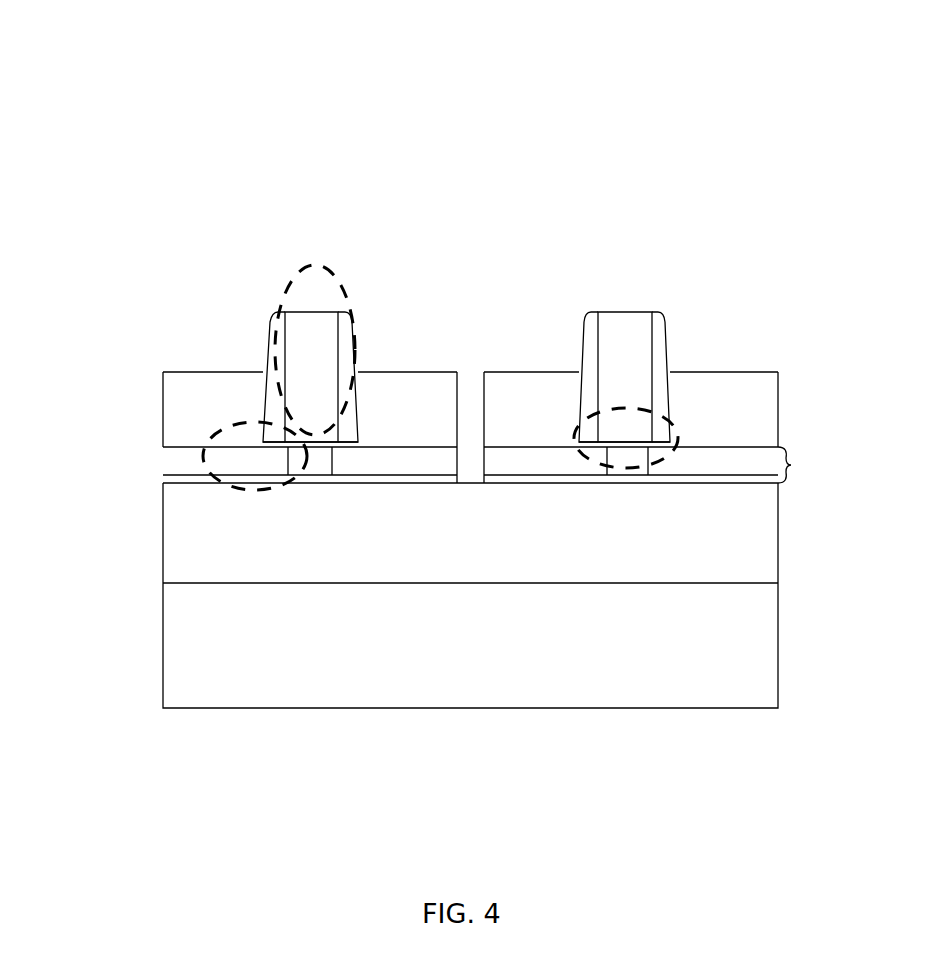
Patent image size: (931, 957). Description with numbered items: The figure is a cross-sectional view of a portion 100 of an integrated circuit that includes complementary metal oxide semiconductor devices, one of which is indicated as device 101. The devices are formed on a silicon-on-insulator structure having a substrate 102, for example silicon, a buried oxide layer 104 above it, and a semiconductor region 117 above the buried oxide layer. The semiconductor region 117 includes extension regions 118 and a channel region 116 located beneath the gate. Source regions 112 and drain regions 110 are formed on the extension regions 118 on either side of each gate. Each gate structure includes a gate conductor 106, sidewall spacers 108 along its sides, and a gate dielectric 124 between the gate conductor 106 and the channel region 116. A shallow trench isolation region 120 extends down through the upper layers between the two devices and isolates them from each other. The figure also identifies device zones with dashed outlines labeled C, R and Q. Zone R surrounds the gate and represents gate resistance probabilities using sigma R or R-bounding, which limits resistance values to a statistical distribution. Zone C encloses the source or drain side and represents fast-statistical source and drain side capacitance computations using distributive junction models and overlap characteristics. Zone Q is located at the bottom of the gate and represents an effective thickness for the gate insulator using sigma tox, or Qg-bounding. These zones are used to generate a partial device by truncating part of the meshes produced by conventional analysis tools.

The portion 100 is at (475, 24).
The CMOS device 101 is at (346, 166).
The substrate 102 is at (747, 625).
The buried oxide layer 104 is at (747, 547).
The gate conductor 106 is at (318, 333).
The sidewall spacers 108 is at (272, 383).
The drain regions 110 is at (437, 378).
The source regions 112 is at (197, 387).
The channel region 116 is at (320, 470).
The semiconductor region 117 is at (791, 465).
The extension regions 118 is at (173, 458).
The shallow trench isolation region 120 is at (470, 465).
The gate dielectric 124 is at (360, 443).
The device zone R is at (268, 304).
The device zone C is at (197, 437).
The device zone Q is at (562, 415).